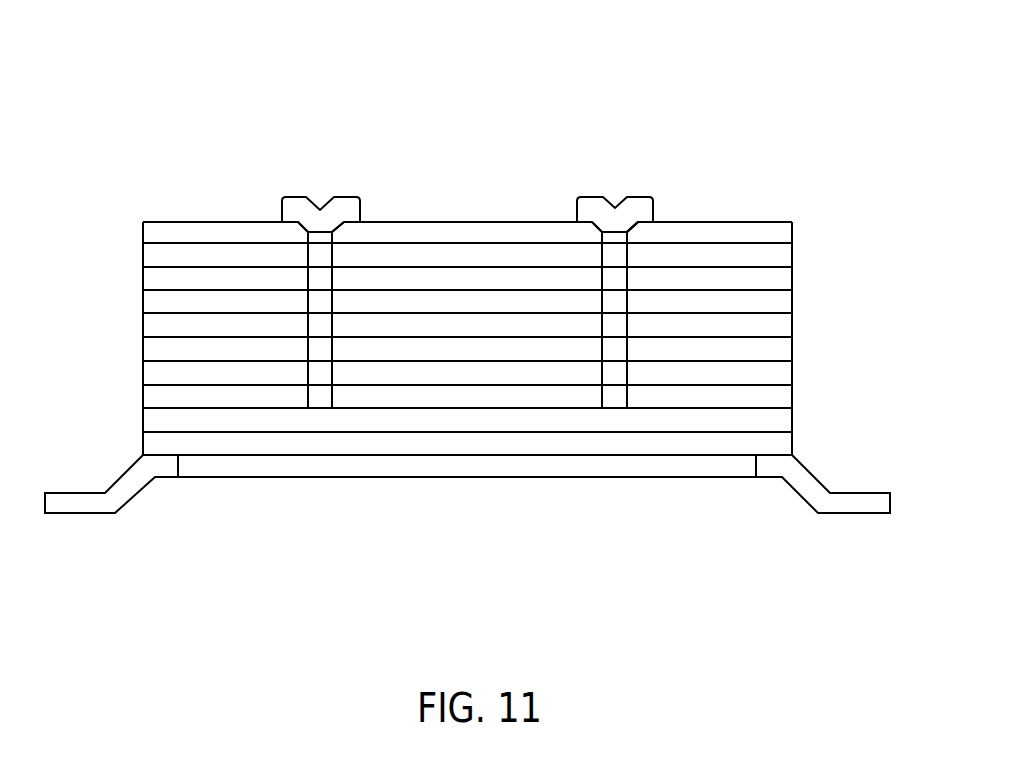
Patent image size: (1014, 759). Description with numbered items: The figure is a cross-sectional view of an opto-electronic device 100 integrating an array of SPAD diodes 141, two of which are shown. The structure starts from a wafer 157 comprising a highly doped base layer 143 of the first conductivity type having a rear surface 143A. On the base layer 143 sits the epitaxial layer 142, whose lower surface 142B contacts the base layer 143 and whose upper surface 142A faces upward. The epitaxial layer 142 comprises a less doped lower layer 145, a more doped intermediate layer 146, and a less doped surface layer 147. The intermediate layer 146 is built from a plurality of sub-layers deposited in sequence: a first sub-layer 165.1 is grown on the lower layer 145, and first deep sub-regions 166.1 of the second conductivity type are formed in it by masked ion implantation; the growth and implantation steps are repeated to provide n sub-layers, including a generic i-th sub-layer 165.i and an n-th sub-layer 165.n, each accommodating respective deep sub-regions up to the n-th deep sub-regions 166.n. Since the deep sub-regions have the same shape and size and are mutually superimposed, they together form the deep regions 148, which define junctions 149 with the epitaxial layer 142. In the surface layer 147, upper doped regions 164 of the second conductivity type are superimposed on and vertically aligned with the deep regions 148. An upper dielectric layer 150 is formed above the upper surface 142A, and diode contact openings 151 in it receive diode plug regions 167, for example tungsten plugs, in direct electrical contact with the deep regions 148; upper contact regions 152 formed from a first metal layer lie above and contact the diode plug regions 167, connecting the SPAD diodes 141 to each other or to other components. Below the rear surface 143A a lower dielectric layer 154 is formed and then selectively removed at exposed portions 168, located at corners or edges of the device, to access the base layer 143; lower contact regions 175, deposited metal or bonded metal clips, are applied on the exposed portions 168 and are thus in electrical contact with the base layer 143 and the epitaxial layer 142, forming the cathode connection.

The opto-electronic device 100 is at (167, 107).
The SPAD diode 141 is at (482, 136).
The epitaxial layer 142 is at (809, 243).
The upper surface 142A is at (188, 237).
The lower surface 142B is at (440, 434).
The base layer 143 is at (152, 443).
The rear surface 143A is at (276, 463).
The lower layer 145 is at (152, 420).
The intermediate layer 146 is at (456, 297).
The surface layer 147 is at (152, 257).
The deep regions 148 is at (321, 347).
The junctions 149 is at (631, 394).
The upper dielectric layer 150 is at (212, 230).
The diode contact openings 151 is at (623, 223).
The upper contact regions 152 is at (295, 205).
The lower dielectric layer 154 is at (332, 468).
The wafer 157 is at (799, 443).
The upper doped regions 164 is at (318, 255).
The n-th sub-layer 165.n is at (152, 278).
The i-th sub-layer 165.i is at (153, 348).
The first sub-layer 165.1 is at (152, 398).
The n-th deep sub-regions 166.n is at (318, 277).
The first deep sub-regions 166.1 is at (318, 393).
The diode plug regions 167 is at (320, 232).
The exposed portions 168 is at (161, 459).
The lower contact regions 175 is at (126, 492).